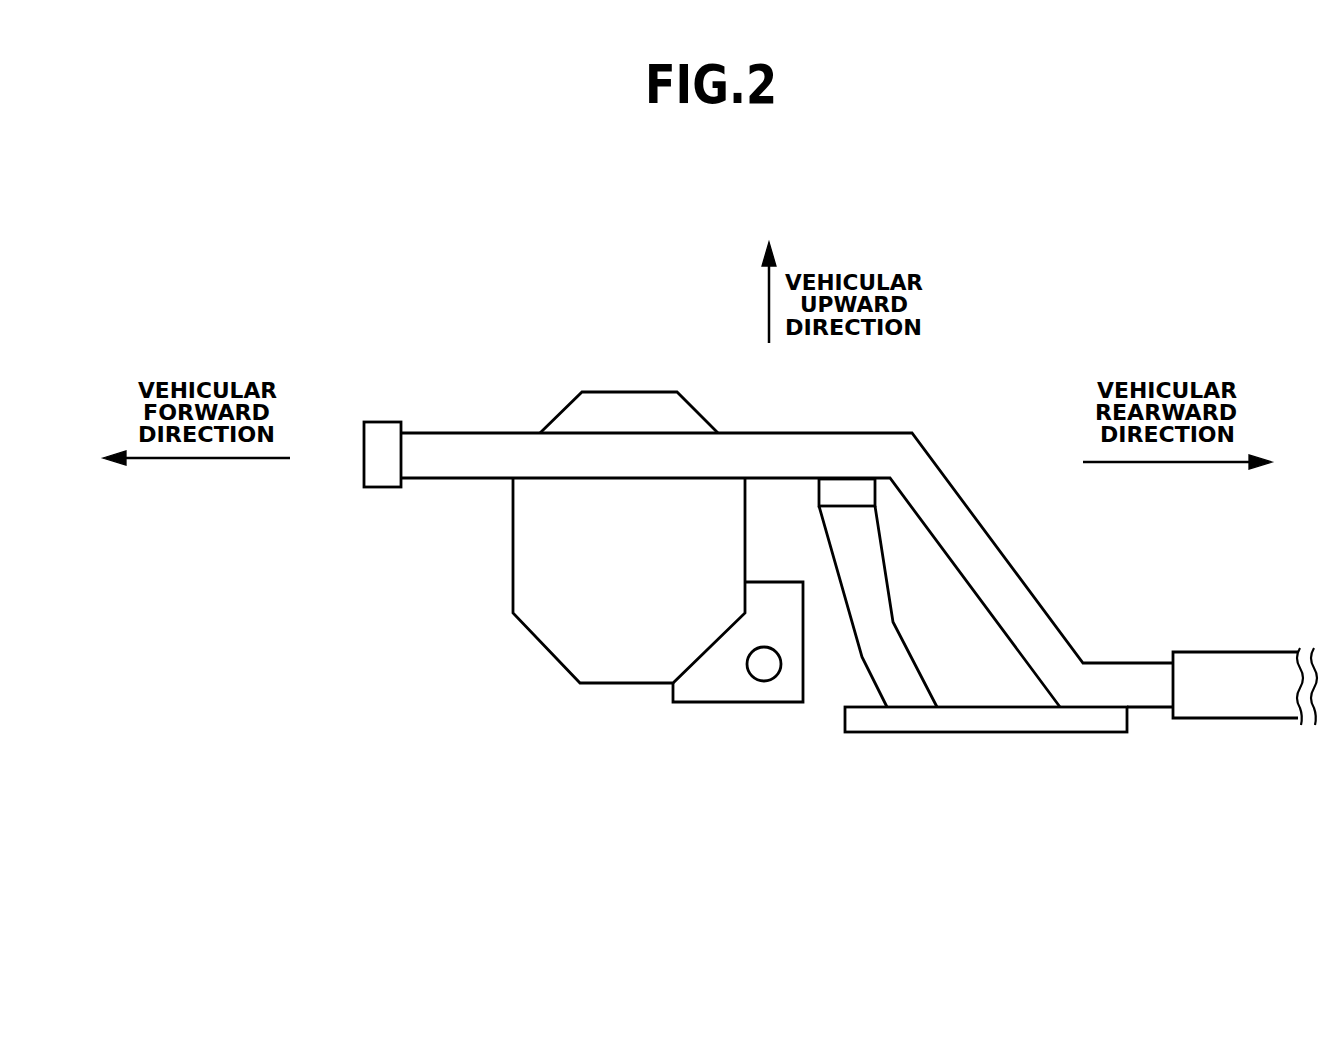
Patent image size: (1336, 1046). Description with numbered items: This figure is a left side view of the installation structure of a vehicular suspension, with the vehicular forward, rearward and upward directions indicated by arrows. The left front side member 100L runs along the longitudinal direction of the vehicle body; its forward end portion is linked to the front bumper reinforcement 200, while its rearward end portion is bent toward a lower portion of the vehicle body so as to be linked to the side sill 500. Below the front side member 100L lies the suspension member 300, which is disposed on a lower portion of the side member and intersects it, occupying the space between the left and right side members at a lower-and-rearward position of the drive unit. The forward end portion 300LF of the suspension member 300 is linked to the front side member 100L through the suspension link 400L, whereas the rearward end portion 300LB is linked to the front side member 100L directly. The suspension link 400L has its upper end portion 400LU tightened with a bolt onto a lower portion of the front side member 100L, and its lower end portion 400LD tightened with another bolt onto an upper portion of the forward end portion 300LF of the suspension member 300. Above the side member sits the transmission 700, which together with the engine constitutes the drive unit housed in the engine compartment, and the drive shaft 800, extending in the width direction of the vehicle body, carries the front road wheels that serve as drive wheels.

The left front side member 100L is at (437, 442).
The front bumper reinforcement 200 is at (383, 487).
The transmission 700 is at (630, 391).
The drive shaft 800 is at (748, 662).
The left suspension link 400L is at (902, 601).
The upper end portion of left suspension link 400LU is at (848, 493).
The lower end portion of left suspension link 400LD is at (903, 693).
The suspension member 300 is at (1003, 770).
The left forward end portion of suspension member 300LF is at (878, 732).
The left rearward end portion of suspension member 300LB is at (1093, 732).
The left side sill 500 is at (1242, 652).